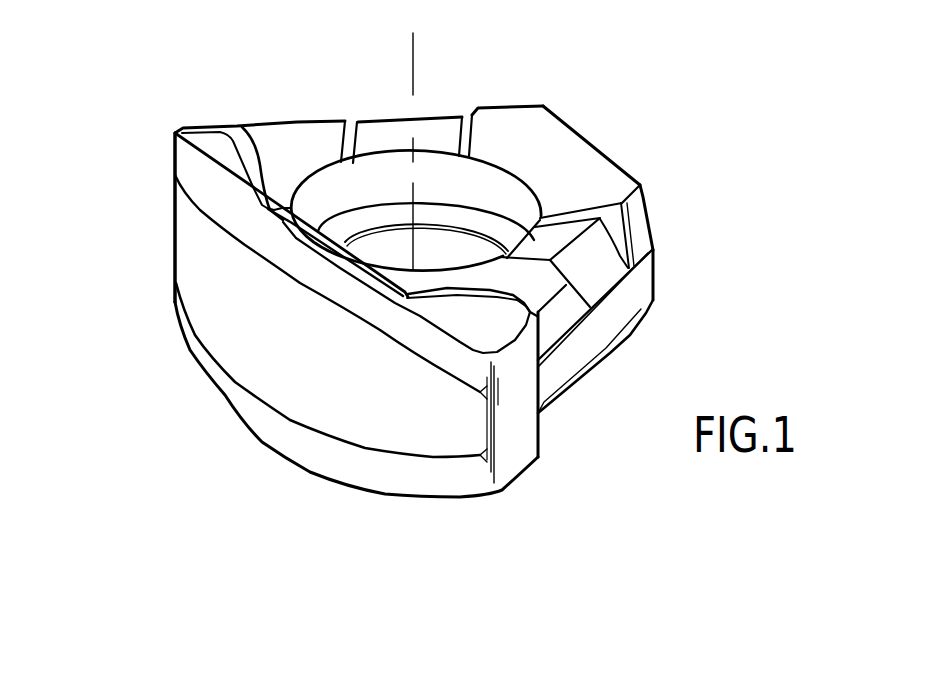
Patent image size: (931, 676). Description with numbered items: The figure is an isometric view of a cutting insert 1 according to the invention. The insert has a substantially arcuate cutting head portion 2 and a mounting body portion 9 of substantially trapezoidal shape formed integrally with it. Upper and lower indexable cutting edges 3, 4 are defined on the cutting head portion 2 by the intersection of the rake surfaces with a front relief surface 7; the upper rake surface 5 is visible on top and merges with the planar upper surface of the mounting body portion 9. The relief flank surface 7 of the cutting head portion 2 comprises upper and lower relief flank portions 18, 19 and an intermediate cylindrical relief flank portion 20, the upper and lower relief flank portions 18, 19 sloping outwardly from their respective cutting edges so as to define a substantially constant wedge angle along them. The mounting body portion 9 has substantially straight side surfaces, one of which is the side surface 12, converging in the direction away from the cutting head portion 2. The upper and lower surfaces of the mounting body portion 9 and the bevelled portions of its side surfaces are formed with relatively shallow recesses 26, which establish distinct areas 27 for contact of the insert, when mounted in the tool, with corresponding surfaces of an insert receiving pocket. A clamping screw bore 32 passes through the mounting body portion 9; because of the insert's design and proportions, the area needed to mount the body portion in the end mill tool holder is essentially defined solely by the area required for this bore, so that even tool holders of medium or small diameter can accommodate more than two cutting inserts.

The cutting insert 1 is at (177, 90).
The cutting head portion 2 is at (237, 467).
The upper cutting edge 3 is at (240, 197).
The lower cutting edge 4 is at (243, 430).
The upper rake surface 5 is at (230, 181).
The front relief surface 7 is at (138, 304).
The mounting body portion 9 is at (633, 149).
The side surface 12 is at (613, 320).
The upper relief flank portion 18 is at (453, 352).
The lower relief flank portion 19 is at (380, 480).
The intermediate cylindrical relief flank portion 20 is at (348, 407).
The shallow recesses 26 is at (438, 137).
The contact areas 27 is at (290, 147).
The clamping screw bore 32 is at (477, 190).